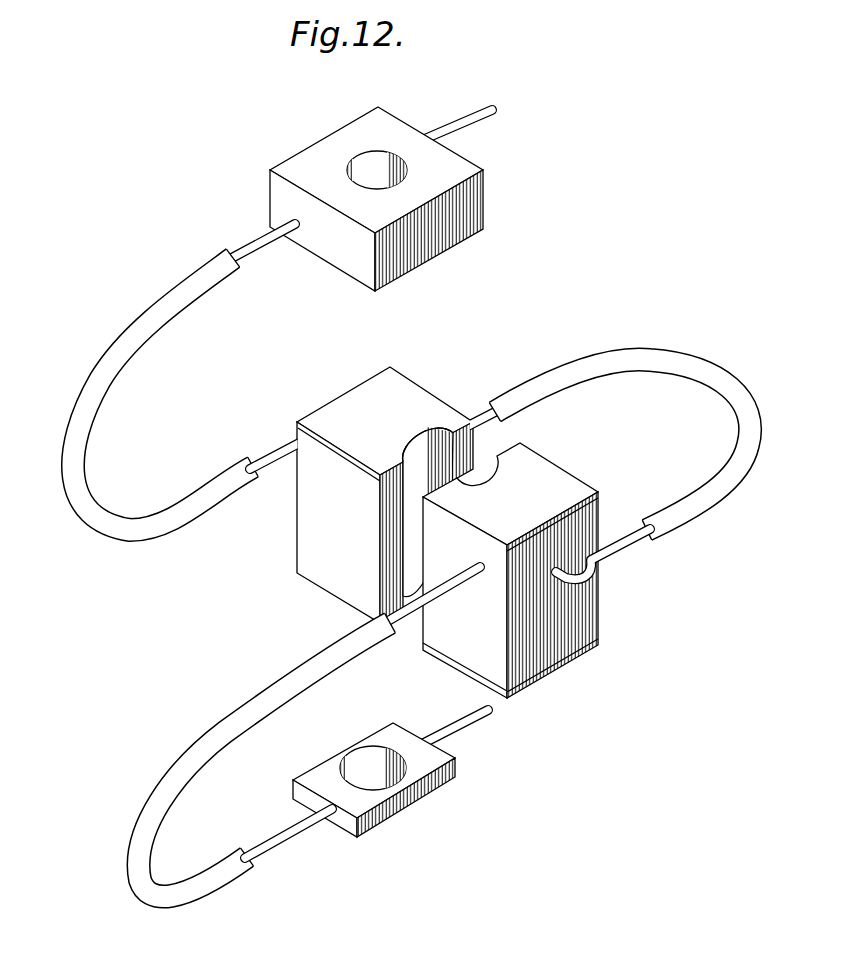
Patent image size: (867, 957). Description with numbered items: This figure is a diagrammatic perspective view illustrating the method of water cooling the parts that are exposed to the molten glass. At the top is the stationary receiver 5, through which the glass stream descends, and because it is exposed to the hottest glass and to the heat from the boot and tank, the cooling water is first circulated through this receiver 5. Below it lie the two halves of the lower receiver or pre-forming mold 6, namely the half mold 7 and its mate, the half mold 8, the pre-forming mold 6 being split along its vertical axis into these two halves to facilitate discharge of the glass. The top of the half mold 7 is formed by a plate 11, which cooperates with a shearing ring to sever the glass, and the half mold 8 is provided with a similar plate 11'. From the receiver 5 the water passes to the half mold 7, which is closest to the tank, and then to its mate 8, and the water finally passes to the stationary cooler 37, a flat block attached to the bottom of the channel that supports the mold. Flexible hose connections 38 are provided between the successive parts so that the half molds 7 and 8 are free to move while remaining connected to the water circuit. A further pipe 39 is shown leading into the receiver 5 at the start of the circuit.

The stationary receiver 5 is at (376, 199).
The pre-forming mold 6 is at (415, 527).
The half mold 7 is at (385, 522).
The half mold 8 is at (510, 595).
The plate 11 is at (385, 421).
The plate 11' is at (510, 494).
The stationary cooler 37 is at (412, 800).
The flexible hose connections 38 is at (147, 540).
The terminal wire 39 is at (466, 121).